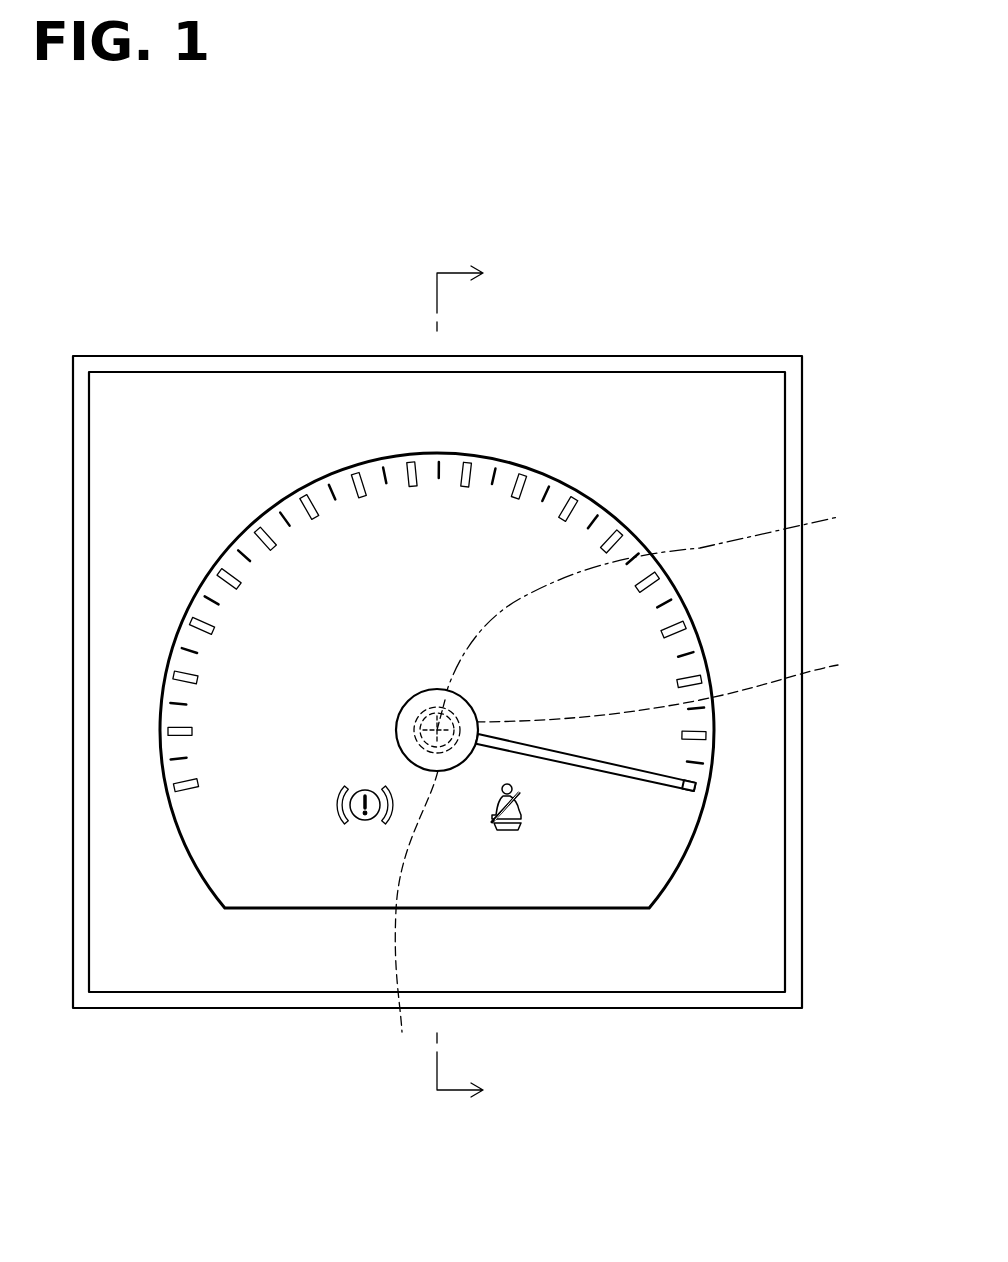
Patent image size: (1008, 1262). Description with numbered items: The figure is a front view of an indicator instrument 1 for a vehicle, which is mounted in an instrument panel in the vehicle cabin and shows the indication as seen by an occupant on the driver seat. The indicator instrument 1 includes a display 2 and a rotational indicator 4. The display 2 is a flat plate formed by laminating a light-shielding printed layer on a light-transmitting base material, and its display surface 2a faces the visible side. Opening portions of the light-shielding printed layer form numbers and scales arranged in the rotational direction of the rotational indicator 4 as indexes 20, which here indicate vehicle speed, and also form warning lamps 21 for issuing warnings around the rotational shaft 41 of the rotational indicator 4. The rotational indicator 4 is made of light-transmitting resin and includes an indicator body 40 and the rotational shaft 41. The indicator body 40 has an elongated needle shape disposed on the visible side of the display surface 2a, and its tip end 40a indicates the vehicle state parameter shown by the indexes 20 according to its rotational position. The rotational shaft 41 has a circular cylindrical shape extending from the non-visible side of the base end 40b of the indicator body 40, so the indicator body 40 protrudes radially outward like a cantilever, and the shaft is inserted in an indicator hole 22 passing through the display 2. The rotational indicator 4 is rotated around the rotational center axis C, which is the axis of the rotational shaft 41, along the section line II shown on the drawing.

The indicator instrument 1 is at (87, 282).
The display 2 is at (749, 437).
The display surface 2a is at (702, 961).
The indexes 20 is at (305, 505).
The warning lamps 21 is at (358, 820).
The indicator hole 22 is at (413, 898).
The rotational indicator 4 is at (872, 640).
The indicator body 40 is at (590, 762).
The tip end 40a is at (697, 782).
The base end 40b is at (455, 752).
The rotational shaft 41 is at (667, 686).
The rotational center axis C is at (649, 618).
The section line II- II is at (479, 684).